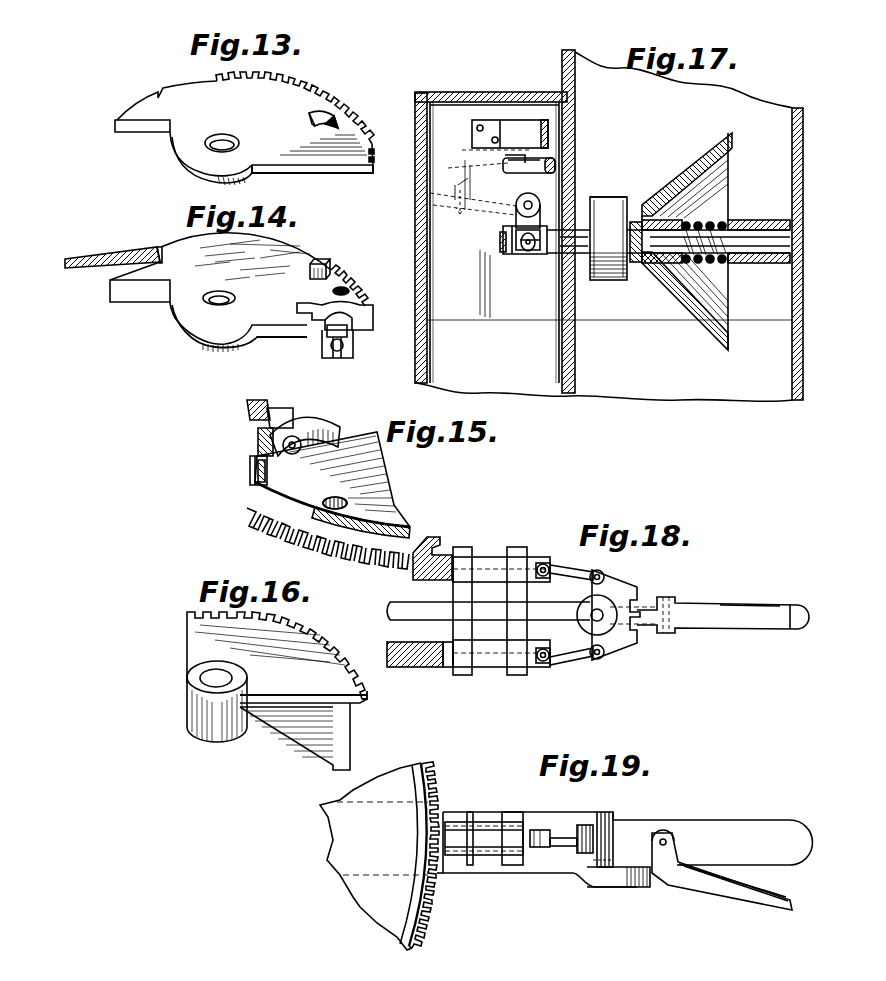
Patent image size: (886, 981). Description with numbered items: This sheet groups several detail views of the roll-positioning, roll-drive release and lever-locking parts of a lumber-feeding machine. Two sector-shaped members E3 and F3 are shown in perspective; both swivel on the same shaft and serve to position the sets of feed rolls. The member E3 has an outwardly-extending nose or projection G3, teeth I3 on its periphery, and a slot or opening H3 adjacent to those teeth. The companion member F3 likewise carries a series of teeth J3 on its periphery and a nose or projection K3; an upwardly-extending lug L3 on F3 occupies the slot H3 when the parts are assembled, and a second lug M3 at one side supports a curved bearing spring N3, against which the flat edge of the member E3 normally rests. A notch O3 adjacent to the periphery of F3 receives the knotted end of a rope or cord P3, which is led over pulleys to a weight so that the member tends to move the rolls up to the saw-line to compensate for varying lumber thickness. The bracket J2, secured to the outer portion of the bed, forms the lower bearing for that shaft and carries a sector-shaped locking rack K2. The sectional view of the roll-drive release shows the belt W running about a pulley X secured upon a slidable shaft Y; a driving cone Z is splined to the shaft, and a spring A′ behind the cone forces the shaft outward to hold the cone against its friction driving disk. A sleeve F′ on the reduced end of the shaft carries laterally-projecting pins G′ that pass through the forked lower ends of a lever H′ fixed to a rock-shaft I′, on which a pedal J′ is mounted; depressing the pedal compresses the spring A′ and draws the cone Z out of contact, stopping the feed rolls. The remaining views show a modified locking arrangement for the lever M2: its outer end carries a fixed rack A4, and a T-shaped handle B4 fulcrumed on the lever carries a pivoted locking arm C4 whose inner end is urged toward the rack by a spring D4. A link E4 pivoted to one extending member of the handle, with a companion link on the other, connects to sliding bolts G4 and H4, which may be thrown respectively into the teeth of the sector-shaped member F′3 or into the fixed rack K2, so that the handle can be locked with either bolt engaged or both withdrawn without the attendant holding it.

In FIG. 13, the sector-shaped member E3 is at (287, 121).
In FIG. 13, the nose or projection G3 is at (130, 114).
In FIG. 13, the teeth I3 is at (316, 93).
In FIG. 13, the slot or opening H3 is at (332, 122).
In FIG. 14, the sector-shaped member F3 is at (272, 266).
In FIG. 15, the sector-shaped member F3 is at (318, 484).
In FIG. 14, the nose or projection K3 is at (143, 295).
In FIG. 14, the upwardly-extending lug L3 is at (323, 260).
In FIG. 14, the teeth J3 is at (350, 276).
In FIG. 15, the teeth J3 is at (262, 528).
In FIG. 14, the notch O3 is at (349, 290).
In FIG. 15, the notch O3 is at (343, 498).
In FIG. 14, the lug or projection M3 is at (322, 330).
In FIG. 15, the lug or projection M3 is at (258, 440).
In FIG. 14, the curved bearing spring N3 is at (368, 312).
In FIG. 15, the curved bearing spring N3 is at (255, 478).
In FIG. 15, the rope or cord P3 is at (407, 525).
In FIG. 16, the sector-shaped locking rack K2 is at (313, 633).
In FIG. 18, the sector-shaped locking rack K2 is at (438, 667).
In FIG. 16, the bracket J2 is at (303, 723).
In FIG. 17, the sleeve F′ is at (690, 118).
In FIG. 17, the belt W is at (628, 172).
In FIG. 17, the pedal J′ is at (455, 183).
In FIG. 17, the rock-shaft I′ is at (520, 195).
In FIG. 17, the forked lever H′ is at (500, 228).
In FIG. 17, the laterally-projecting pins G′ is at (506, 253).
In FIG. 17, the shaft Y is at (577, 240).
In FIG. 17, the pulley X is at (590, 285).
In FIG. 17, the spring A′ is at (710, 263).
In FIG. 17, the driving cone Z is at (707, 323).
In FIG. 18, the lever M2 is at (510, 608).
In FIG. 19, the lever M2 is at (483, 867).
In FIG. 18, the sliding bolt H4 is at (493, 668).
In FIG. 18, the sliding bolt G4 is at (492, 563).
In FIG. 19, the sliding bolt G4 is at (482, 840).
In FIG. 18, the link E4 is at (578, 588).
In FIG. 19, the link E4 is at (570, 840).
In FIG. 18, the fixed rack A4 is at (613, 633).
In FIG. 19, the fixed rack A4 is at (623, 873).
In FIG. 18, the T-shaped handle B4 is at (647, 607).
In FIG. 19, the T-shaped handle B4 is at (730, 800).
In FIG. 18, the pivoted locking arm C4 is at (747, 617).
In FIG. 19, the pivoted locking arm C4 is at (683, 883).
In FIG. 18, the sector-shaped member F′3 is at (480, 503).
In FIG. 19, the sector-shaped member F′3 is at (412, 826).
In FIG. 19, the spring D4 is at (733, 877).